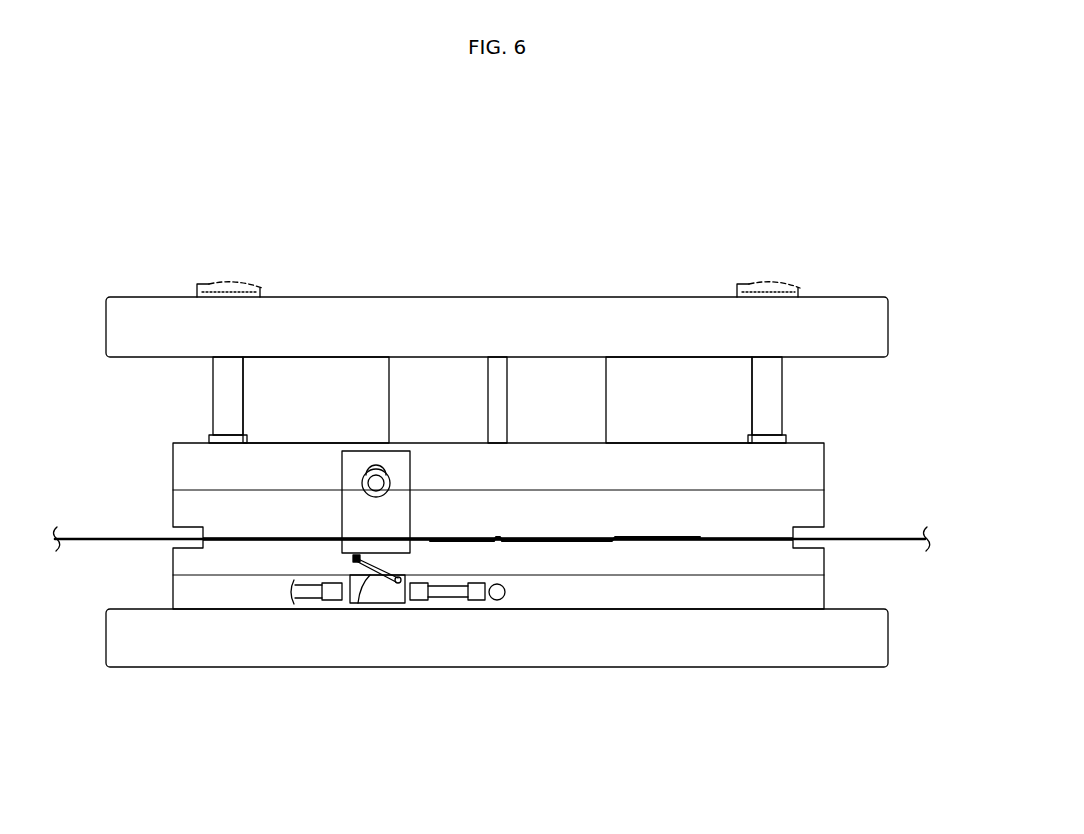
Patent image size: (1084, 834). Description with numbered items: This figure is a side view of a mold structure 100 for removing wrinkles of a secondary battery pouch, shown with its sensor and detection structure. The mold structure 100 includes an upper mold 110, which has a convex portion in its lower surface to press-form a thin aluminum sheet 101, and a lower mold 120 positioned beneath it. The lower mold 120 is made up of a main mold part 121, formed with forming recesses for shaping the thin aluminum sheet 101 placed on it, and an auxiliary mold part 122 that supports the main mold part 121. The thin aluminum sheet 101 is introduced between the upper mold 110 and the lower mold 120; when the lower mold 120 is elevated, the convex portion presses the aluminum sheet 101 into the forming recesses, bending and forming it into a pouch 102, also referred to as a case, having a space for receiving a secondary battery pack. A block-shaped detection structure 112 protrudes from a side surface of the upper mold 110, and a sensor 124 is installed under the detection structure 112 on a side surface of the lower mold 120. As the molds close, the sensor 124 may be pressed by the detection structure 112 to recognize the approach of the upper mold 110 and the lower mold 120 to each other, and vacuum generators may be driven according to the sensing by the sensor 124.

The mold structure 100 is at (786, 213).
The thin aluminum sheet 101 is at (90, 541).
The pouch 102 is at (544, 537).
The upper mold 110 is at (846, 432).
The detection structure 112 is at (363, 510).
The lower mold 120 is at (866, 578).
The main mold part 121 is at (712, 512).
The auxiliary mold part 122 is at (617, 590).
The sensor 124 is at (358, 605).